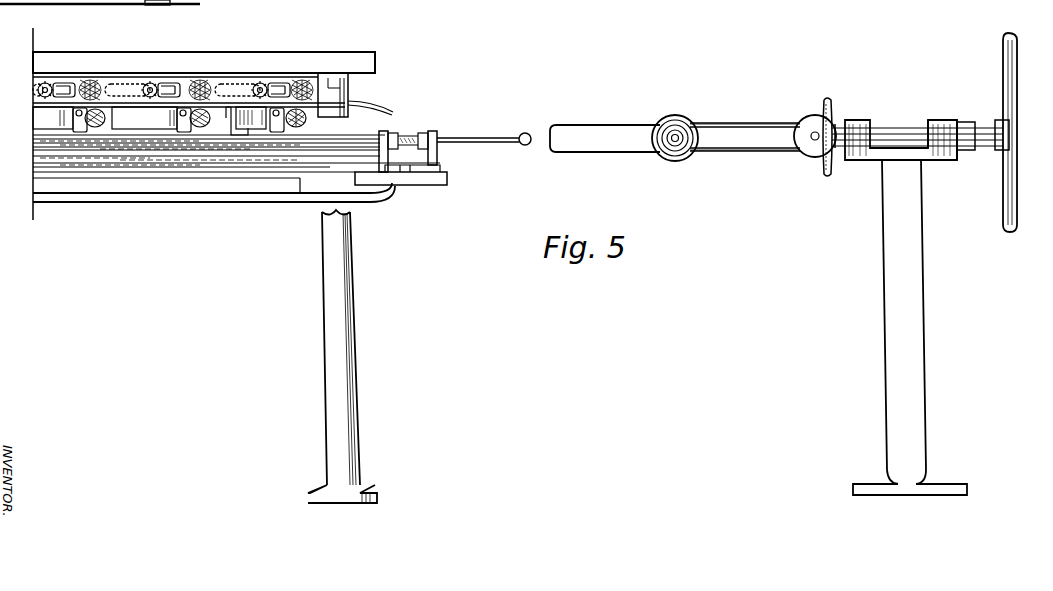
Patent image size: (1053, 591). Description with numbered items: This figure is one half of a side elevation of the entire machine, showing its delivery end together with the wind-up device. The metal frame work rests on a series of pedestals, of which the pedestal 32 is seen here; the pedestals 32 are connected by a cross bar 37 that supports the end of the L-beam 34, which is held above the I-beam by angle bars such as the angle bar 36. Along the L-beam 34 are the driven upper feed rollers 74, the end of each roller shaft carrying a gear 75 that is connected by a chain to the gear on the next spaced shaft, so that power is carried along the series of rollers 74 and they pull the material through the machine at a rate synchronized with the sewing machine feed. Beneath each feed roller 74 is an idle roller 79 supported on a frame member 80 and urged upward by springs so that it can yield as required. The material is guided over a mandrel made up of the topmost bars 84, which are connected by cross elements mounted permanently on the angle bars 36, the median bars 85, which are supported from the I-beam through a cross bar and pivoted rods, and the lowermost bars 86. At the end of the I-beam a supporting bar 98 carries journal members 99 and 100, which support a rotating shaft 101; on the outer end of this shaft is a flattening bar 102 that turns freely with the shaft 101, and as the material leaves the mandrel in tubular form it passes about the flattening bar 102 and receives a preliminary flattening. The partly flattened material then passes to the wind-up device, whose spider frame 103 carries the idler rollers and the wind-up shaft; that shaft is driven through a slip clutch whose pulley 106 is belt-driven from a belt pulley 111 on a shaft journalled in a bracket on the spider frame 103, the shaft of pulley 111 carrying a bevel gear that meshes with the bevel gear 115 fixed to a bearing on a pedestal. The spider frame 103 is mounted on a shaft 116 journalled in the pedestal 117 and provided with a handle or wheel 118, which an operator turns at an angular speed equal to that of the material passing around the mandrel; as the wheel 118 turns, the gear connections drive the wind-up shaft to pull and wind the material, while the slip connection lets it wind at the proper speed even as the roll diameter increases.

The pedestal 32 is at (358, 338).
The L-beam 34 is at (320, 54).
The angle bar 36 is at (230, 129).
The cross bar 37 is at (338, 78).
The feed roller 74 is at (89, 80).
The gear 75 is at (150, 80).
The idle roller 79 is at (305, 123).
The frame member 80 is at (249, 116).
The topmost mandrel bar 84 is at (370, 107).
The median mandrel bar 85 is at (345, 156).
The lowermost mandrel bar 86 is at (252, 203).
The supporting bar 98 is at (432, 186).
The journal member 99 is at (385, 134).
The journal member 100 is at (435, 133).
The rotating shaft 101 is at (492, 137).
The flattening bar 102 is at (529, 133).
The spider frame 103 is at (619, 126).
The pulley 106 is at (682, 120).
The belt pulley 111 is at (811, 120).
The bevel gear 115 is at (832, 106).
The shaft 116 is at (900, 128).
The pedestal 117 is at (956, 110).
The handle or wheel 118 is at (1005, 50).